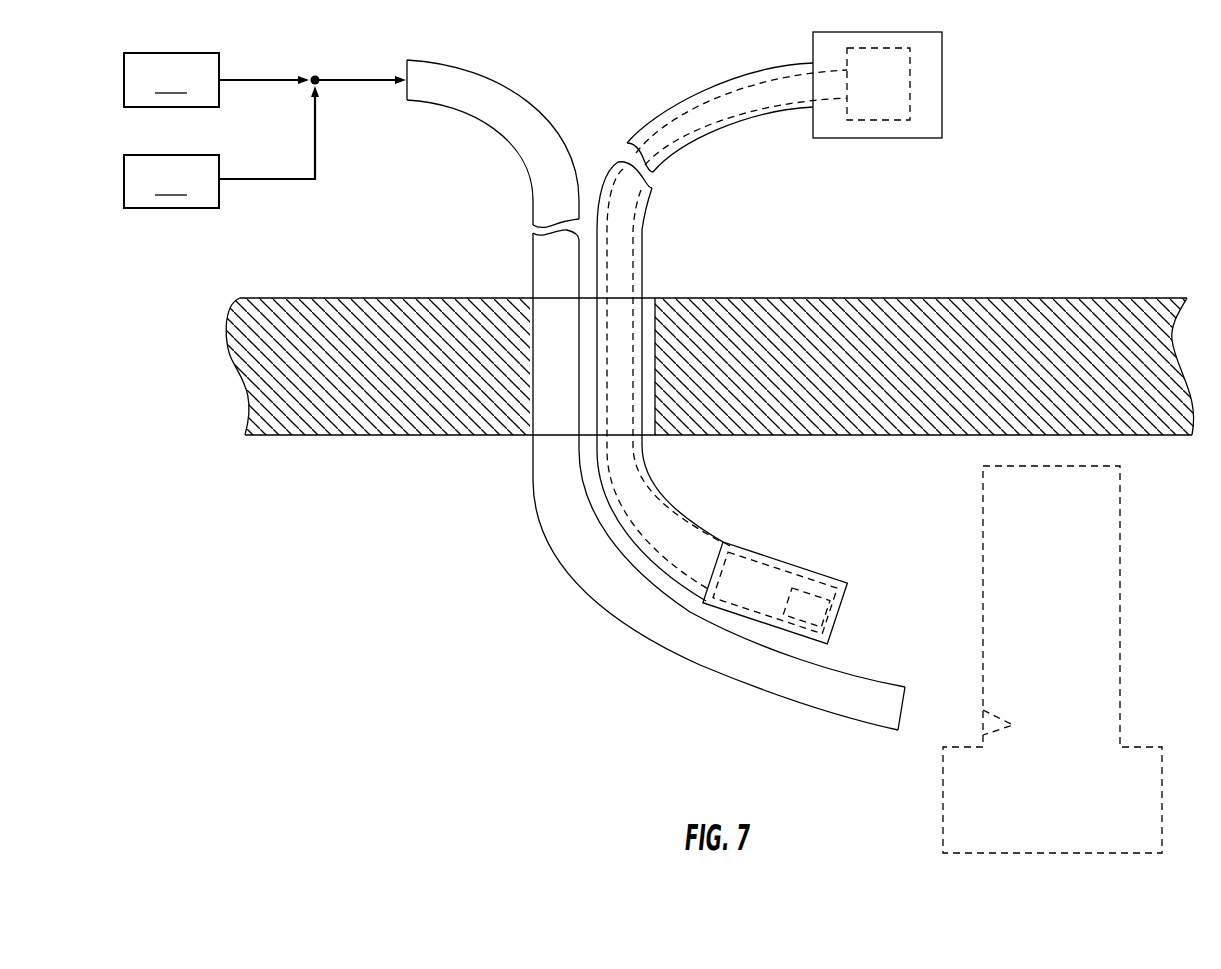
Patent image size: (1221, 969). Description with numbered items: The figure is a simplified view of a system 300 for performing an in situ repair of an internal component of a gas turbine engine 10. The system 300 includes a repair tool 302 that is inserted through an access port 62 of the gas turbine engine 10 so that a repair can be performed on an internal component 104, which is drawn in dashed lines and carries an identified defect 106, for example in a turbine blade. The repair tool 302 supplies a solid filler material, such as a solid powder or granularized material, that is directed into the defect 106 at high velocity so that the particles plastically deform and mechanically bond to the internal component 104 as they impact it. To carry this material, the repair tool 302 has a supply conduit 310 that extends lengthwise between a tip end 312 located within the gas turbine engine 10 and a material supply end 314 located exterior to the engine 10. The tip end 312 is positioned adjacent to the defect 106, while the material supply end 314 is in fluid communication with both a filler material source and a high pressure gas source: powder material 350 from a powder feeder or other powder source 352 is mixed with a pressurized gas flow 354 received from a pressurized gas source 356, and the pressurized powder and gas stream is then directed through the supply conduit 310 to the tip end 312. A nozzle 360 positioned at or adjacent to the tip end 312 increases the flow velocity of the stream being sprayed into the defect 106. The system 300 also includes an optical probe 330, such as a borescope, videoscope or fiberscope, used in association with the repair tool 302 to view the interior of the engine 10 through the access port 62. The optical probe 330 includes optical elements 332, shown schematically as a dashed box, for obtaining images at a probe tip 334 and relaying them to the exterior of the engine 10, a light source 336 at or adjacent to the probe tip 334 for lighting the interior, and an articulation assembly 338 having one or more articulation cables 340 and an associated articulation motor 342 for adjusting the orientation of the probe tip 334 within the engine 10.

The gas turbine engine 10 is at (1077, 292).
The access port 62 is at (657, 323).
The internal component 104 is at (1055, 659).
The defect 106 is at (1000, 718).
The system 300 is at (659, 397).
The repair tool 302 is at (667, 397).
The supply conduit 310 is at (667, 397).
The tip end 312 is at (905, 697).
The material supply end 314 is at (409, 59).
The optical probe 330 is at (692, 522).
The optical elements 332 is at (781, 575).
The probe tip 334 is at (775, 593).
The light source 336 is at (806, 607).
The articulation assembly 338 is at (868, 83).
The articulation cables 340 is at (675, 110).
The articulation motor 342 is at (910, 85).
The powder material 350 is at (317, 138).
The powder source 352 is at (171, 181).
The pressurized gas flow 354 is at (285, 78).
The pressurized gas source 356 is at (171, 80).
The nozzle 360 is at (878, 712).